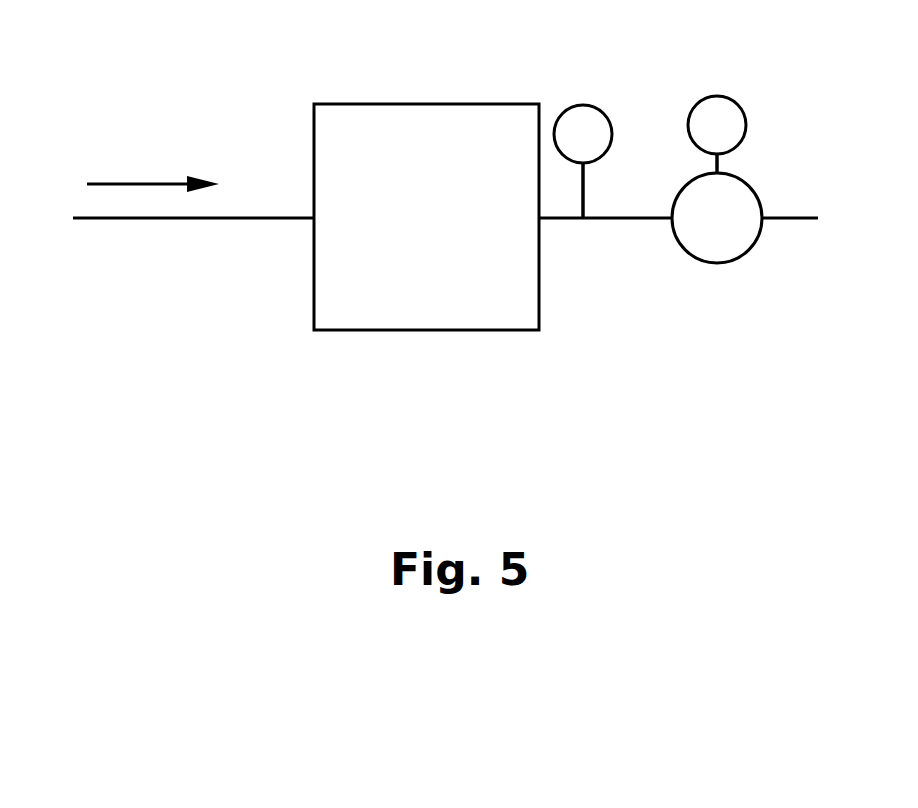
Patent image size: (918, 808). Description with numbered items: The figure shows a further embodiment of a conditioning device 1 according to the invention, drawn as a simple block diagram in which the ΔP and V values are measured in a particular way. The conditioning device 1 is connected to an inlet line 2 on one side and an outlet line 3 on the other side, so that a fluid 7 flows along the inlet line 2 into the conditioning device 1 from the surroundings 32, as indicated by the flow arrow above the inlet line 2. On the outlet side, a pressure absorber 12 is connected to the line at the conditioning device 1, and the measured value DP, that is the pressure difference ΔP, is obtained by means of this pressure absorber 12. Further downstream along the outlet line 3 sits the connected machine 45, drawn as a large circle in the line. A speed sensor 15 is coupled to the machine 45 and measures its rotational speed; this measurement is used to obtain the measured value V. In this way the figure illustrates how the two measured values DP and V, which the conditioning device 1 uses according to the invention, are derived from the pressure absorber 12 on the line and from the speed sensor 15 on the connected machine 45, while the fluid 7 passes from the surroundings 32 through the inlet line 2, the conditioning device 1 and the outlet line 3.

The conditioning device 1 is at (392, 300).
The inlet line 2 is at (165, 220).
The outlet line 3 is at (630, 220).
The fluid 7 is at (130, 183).
The pressure absorber 12 is at (582, 105).
The speed sensor 15 is at (738, 105).
The surroundings 32 is at (76, 298).
The machine 45 is at (733, 235).
The ΔP measured value DP is at (583, 190).
The V measured value V is at (718, 162).